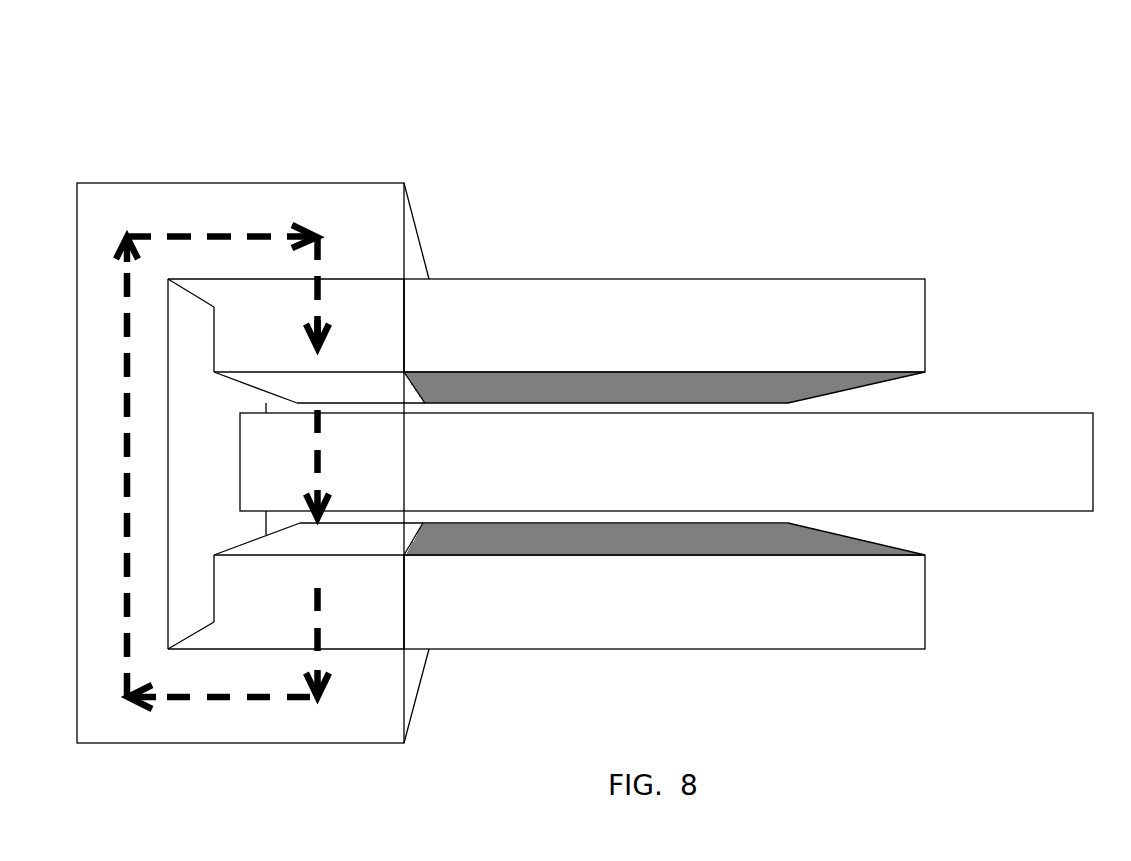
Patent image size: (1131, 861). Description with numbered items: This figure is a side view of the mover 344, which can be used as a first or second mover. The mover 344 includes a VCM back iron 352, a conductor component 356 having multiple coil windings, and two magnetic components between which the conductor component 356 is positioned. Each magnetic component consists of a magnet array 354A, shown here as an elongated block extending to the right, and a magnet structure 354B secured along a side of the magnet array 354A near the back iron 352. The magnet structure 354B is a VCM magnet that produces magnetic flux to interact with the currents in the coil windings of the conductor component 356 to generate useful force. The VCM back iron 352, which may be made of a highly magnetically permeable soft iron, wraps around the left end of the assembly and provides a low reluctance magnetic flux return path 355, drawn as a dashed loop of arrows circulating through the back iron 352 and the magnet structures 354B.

The mover 344 is at (276, 116).
The VCM back iron 352 is at (203, 210).
The magnet array 354A is at (735, 297).
The magnet structure 354B is at (360, 297).
The magnetic flux return path 355 is at (243, 700).
The conductor component 356 is at (967, 440).